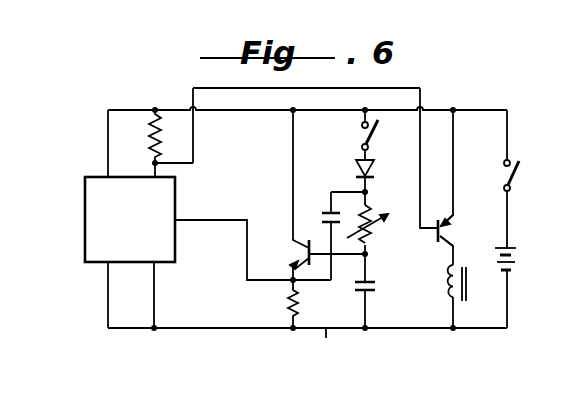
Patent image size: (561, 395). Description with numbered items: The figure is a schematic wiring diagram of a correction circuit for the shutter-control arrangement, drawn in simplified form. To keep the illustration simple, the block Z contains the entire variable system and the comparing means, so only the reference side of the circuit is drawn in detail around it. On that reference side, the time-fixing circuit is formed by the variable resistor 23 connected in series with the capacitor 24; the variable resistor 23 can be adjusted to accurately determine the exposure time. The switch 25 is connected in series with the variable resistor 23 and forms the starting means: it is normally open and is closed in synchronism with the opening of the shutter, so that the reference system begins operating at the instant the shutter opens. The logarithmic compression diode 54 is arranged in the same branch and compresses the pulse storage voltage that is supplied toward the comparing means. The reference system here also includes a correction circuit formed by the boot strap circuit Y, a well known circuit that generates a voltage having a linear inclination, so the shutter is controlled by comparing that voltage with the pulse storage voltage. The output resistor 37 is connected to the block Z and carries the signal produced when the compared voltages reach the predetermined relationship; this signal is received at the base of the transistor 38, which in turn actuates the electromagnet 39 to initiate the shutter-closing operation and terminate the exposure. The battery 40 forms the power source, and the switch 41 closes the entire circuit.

The block Z is at (86, 222).
The boot strap circuit Y is at (326, 345).
The output resistor 37 is at (152, 143).
The switch 25 is at (362, 137).
The logarithmic compression diode 54 is at (378, 168).
The variable resistor 23 is at (380, 240).
The capacitor 24 is at (376, 288).
The transistor 38 is at (447, 231).
The electromagnet 39 is at (447, 287).
The battery 40 is at (495, 262).
The switch 41 is at (505, 178).